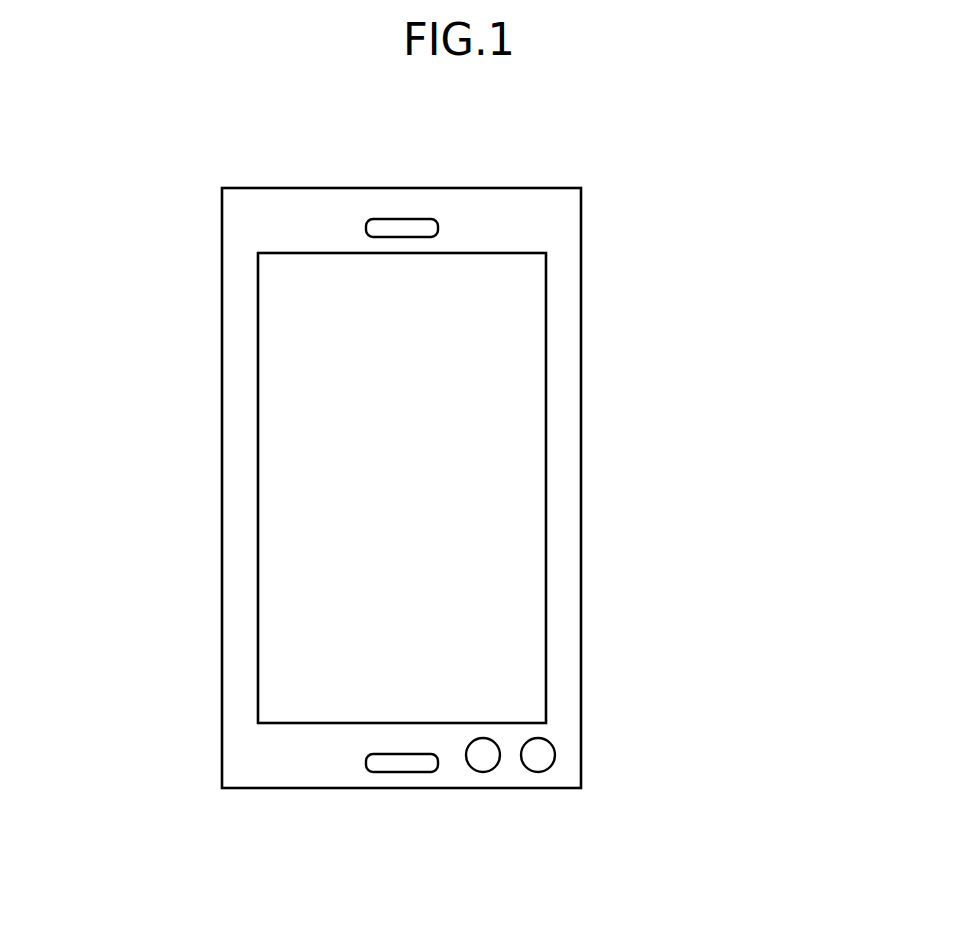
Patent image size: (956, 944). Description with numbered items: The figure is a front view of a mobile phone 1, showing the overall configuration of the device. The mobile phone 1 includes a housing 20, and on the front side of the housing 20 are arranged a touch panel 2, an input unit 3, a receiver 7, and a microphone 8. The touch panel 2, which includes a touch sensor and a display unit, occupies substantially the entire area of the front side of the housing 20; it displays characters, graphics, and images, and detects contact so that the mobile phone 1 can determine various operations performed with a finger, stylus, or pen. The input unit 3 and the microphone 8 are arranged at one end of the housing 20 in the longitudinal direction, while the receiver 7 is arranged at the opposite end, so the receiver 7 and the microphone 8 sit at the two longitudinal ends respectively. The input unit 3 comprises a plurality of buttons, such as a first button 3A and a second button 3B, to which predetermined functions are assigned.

The mobile phone 1 is at (619, 167).
The housing 20 is at (242, 503).
The touch panel 2 is at (498, 503).
The receiver 7 is at (401, 219).
The microphone 8 is at (402, 772).
The input unit 3 is at (510, 817).
The first button 3A is at (483, 772).
The second button 3B is at (538, 794).